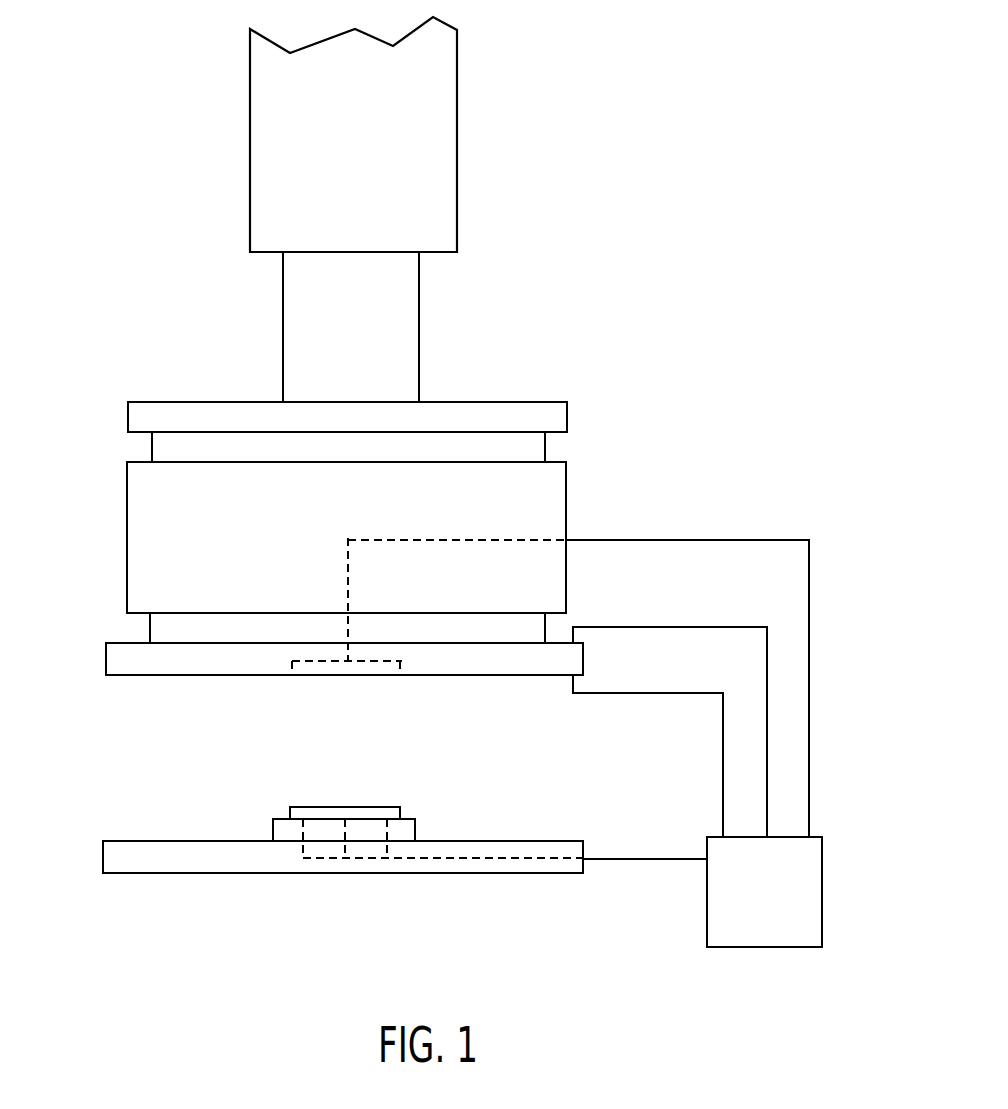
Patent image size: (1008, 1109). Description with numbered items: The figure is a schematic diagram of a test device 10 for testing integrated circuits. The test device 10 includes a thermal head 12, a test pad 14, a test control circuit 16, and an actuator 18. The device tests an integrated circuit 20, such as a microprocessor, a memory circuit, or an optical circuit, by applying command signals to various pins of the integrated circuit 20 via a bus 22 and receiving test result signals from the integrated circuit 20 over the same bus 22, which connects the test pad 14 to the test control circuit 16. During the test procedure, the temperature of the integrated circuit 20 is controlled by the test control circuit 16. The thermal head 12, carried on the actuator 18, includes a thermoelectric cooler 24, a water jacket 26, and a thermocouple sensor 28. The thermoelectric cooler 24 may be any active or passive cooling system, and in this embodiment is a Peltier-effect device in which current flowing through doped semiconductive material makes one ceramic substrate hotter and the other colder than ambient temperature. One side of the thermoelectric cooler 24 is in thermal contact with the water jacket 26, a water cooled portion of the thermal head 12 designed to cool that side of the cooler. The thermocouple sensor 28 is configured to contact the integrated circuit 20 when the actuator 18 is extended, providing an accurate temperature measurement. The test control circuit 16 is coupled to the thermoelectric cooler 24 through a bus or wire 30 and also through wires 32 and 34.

The test device 10 is at (584, 172).
The thermal head 12 is at (590, 350).
The test pad 14 is at (185, 858).
The test control circuit 16 is at (822, 868).
The actuator 18 is at (457, 175).
The integrated circuit 20 is at (363, 805).
The bus 22 is at (630, 863).
The thermoelectric cooler 24 is at (106, 657).
The water jacket 26 is at (127, 545).
The thermocouple sensor 28 is at (380, 675).
The bus or wire 30 is at (809, 655).
The wire 32 is at (767, 725).
The wire 34 is at (723, 783).